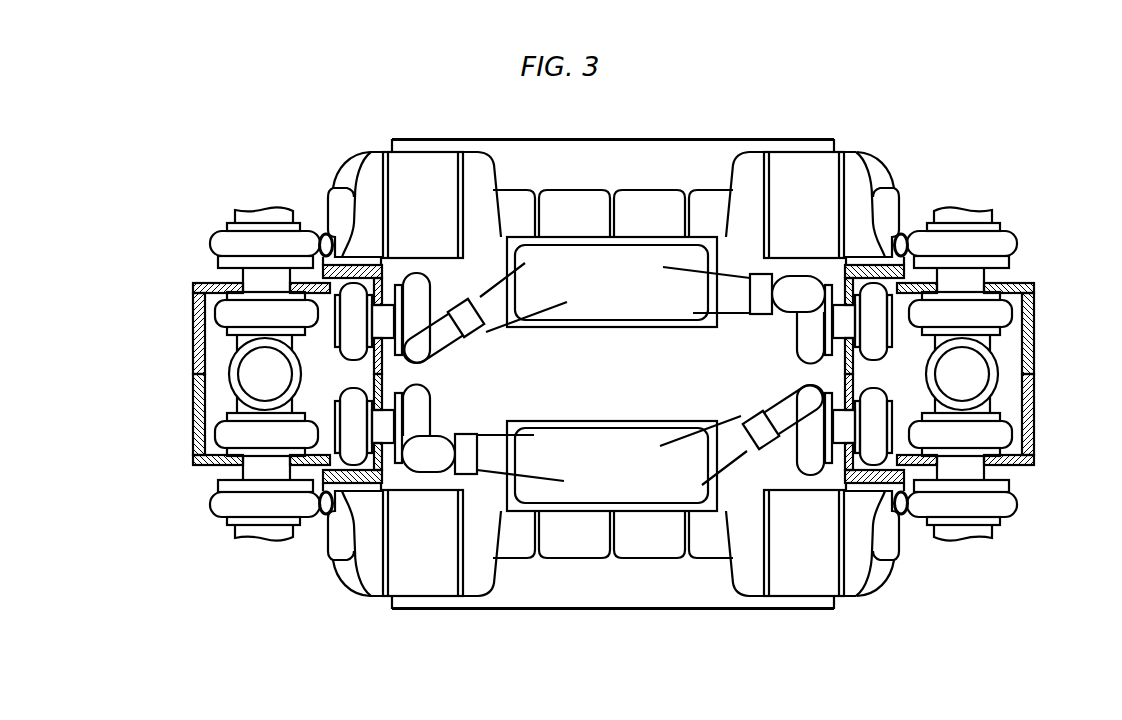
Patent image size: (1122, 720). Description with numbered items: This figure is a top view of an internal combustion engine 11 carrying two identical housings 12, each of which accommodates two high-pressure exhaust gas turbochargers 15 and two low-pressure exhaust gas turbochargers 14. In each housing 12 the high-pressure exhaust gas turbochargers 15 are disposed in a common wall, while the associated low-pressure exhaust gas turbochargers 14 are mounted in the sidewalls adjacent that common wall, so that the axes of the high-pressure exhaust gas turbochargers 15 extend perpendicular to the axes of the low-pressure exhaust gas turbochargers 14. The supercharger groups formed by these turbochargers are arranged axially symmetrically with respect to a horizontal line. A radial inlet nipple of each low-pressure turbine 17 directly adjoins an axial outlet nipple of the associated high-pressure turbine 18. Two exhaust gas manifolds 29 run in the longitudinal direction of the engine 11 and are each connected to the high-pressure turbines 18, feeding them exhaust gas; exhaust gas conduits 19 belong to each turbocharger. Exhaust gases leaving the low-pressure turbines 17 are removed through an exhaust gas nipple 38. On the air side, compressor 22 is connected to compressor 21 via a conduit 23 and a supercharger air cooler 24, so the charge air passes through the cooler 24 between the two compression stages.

The internal combustion engine 11 is at (598, 385).
The housing 12 is at (200, 365).
The low-pressure exhaust gas turbocharger 14 is at (222, 308).
The high-pressure exhaust gas turbocharger 15 is at (364, 400).
The low-pressure turbine 17 is at (253, 325).
The high-pressure turbine 18 is at (341, 325).
The exhaust gas conduit 19 is at (322, 330).
The compressor 21 is at (310, 237).
The compressor 22 is at (425, 292).
The conduit 23 is at (613, 374).
The supercharger air cooler 24 is at (413, 225).
The exhaust gas manifold 29 is at (672, 148).
The exhaust gas nipple 38 is at (253, 385).